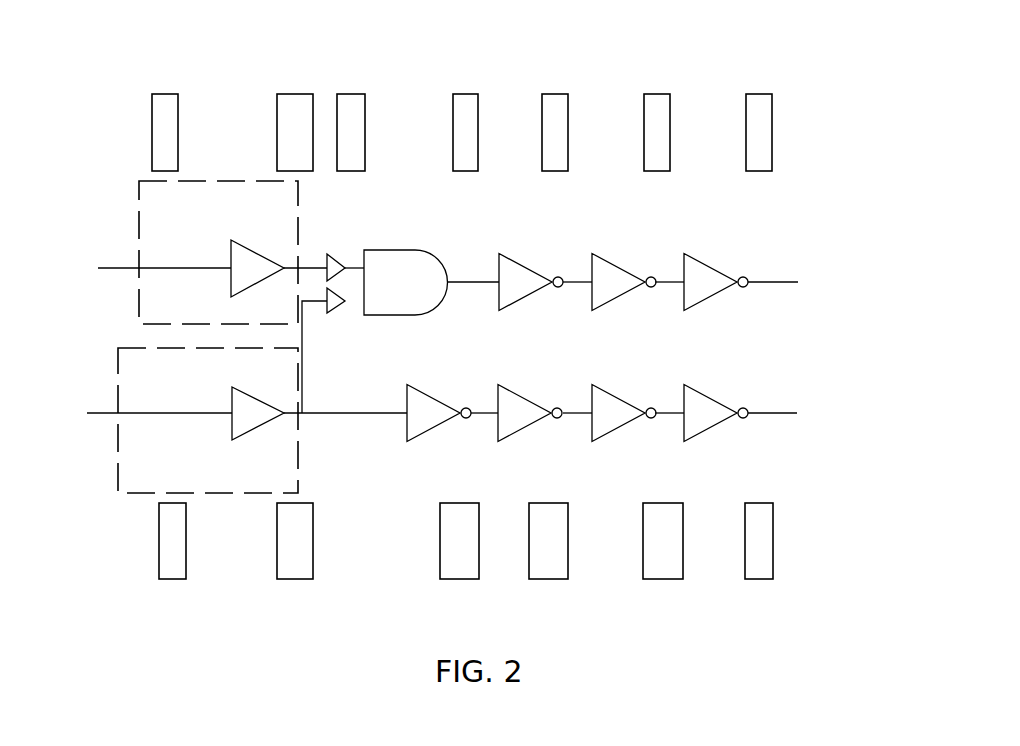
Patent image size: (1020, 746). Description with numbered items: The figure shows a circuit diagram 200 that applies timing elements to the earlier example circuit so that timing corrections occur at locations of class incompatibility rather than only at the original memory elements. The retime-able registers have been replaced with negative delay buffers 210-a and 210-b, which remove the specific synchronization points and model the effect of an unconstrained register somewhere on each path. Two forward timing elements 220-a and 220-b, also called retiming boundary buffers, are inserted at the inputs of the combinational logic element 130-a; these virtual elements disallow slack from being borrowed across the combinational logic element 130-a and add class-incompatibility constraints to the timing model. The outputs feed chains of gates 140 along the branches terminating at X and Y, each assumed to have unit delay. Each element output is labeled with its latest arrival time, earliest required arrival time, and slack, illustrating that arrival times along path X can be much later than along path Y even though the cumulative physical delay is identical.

The circuit diagram 200 is at (270, 46).
The negative delay buffer 210-a is at (231, 276).
The negative delay buffer 210-b is at (232, 428).
The timing element 220-a is at (342, 262).
The timing element 220-b is at (338, 307).
The combinational logic element 130-a is at (442, 262).
The gates 140 is at (660, 222).